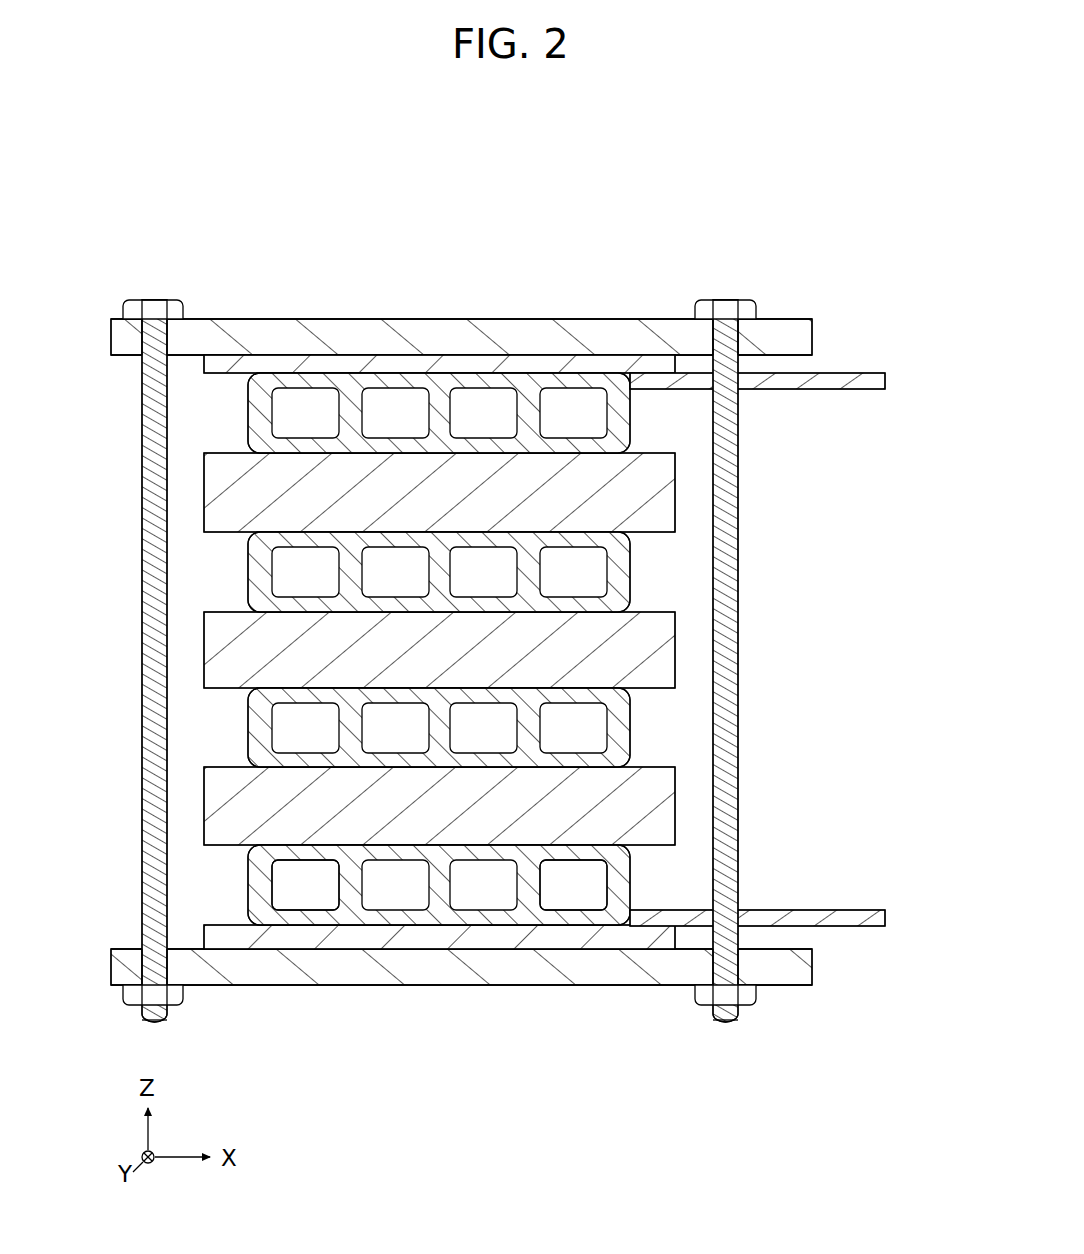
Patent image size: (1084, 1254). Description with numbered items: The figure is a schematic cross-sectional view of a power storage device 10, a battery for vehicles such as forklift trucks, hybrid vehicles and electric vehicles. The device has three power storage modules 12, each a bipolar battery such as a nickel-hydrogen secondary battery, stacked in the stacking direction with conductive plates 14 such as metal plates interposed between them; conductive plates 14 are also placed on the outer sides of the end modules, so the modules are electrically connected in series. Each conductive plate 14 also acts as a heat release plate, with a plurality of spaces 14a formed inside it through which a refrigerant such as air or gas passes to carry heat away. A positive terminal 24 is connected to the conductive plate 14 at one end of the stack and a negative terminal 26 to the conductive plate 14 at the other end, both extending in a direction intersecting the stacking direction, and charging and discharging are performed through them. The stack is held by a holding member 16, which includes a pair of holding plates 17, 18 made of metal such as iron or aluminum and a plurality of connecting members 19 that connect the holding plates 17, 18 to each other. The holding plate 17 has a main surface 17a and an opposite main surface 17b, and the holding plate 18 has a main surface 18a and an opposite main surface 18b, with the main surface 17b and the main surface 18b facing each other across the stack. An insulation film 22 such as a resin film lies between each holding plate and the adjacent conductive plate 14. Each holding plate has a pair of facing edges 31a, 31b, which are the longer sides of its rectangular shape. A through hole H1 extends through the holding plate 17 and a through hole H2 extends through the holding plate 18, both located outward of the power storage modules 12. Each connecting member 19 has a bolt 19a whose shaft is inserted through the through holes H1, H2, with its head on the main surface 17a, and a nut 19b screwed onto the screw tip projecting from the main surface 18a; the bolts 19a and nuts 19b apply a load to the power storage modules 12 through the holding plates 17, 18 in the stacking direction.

The power storage device 10 is at (743, 254).
The power storage module 12 is at (656, 497).
The conductive plate 14 is at (628, 402).
The space 14a is at (543, 876).
The holding member 16 is at (218, 256).
The holding plate 17 is at (322, 336).
The main surface 17a is at (603, 318).
The main surface 17b is at (814, 356).
The holding plate 18 is at (337, 970).
The main surface 18a is at (288, 986).
The main surface 18b is at (140, 948).
The connecting member 19 is at (142, 447).
The bolt 19a is at (142, 383).
The nut 19b is at (183, 996).
The insulation film 22 is at (525, 360).
The positive terminal 24 is at (886, 918).
The negative terminal 26 is at (886, 381).
The edge 31a is at (110, 302).
The edge 31b is at (812, 318).
The through hole H1 is at (150, 342).
The through hole H2 is at (135, 965).